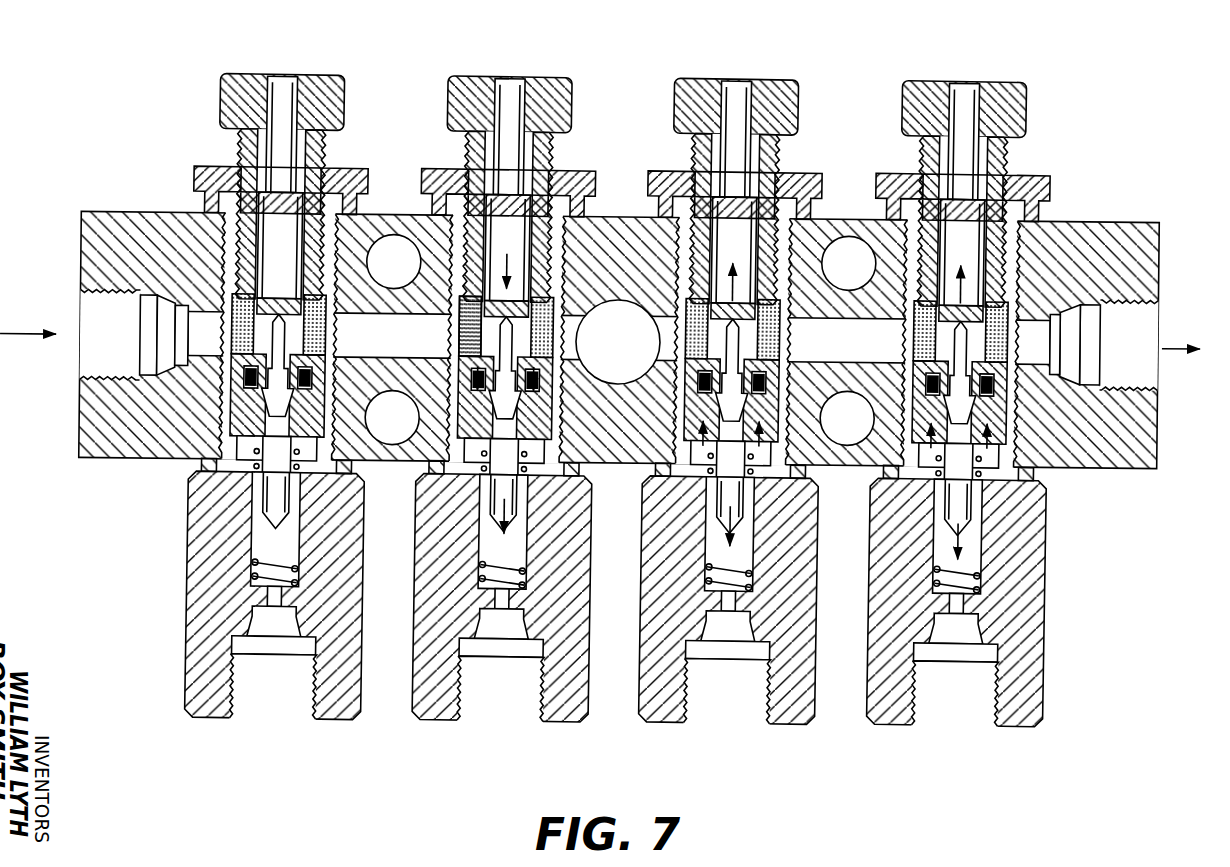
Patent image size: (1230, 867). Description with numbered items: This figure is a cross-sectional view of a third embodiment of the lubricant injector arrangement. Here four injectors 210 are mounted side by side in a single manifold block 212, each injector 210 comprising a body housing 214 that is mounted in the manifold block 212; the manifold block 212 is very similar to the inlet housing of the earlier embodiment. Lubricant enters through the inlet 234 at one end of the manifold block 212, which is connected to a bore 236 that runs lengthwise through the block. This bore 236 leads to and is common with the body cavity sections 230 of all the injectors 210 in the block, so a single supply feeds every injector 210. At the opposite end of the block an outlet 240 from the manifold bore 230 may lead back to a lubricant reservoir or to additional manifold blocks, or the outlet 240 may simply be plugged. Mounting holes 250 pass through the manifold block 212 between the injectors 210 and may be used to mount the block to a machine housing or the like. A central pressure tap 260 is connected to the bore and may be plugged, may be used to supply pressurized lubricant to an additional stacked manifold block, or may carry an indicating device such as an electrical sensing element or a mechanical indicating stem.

The injector 210 is at (348, 78).
The manifold block 212 is at (1143, 217).
The body housing 214 is at (350, 171).
The body cavity section 230 is at (330, 349).
The inlet 234 is at (88, 320).
The bore 236 is at (418, 333).
The outlet 240 is at (1135, 369).
The mounting hole 250 is at (848, 234).
The central pressure tap 260 is at (630, 300).